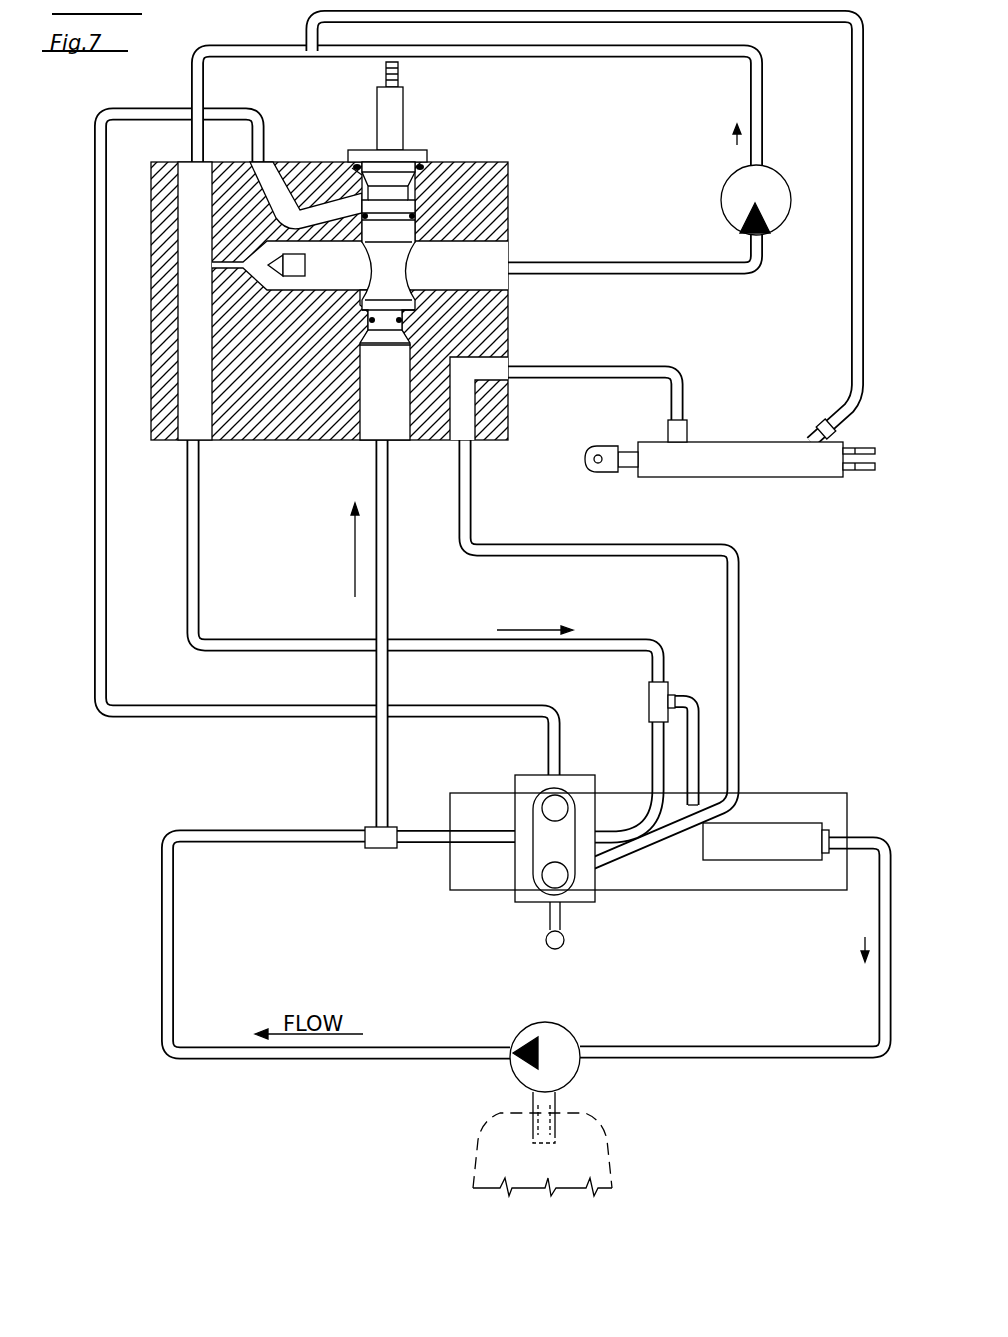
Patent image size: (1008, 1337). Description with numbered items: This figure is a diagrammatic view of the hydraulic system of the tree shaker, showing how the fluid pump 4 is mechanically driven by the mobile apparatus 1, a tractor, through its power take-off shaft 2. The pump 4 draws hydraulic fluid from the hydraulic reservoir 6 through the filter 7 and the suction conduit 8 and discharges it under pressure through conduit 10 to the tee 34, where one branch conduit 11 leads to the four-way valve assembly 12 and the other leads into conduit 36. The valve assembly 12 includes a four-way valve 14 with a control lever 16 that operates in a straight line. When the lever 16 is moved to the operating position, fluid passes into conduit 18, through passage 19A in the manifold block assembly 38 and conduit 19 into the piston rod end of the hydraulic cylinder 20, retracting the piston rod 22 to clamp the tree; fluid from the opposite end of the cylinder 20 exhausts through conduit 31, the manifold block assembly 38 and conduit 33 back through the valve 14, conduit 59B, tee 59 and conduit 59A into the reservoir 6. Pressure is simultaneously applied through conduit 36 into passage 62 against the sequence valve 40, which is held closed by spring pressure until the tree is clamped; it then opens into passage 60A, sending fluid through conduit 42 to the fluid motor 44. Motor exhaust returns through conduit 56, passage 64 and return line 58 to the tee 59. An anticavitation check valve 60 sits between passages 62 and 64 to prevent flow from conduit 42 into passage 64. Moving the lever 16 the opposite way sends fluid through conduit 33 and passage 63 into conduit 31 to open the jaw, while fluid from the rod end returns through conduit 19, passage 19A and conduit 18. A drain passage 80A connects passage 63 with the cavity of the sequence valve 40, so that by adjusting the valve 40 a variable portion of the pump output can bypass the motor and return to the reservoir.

The mobile apparatus 1 is at (584, 1146).
The power take-off shaft 2 is at (556, 1100).
The fluid pump 4 is at (570, 1040).
The hydraulic reservoir 6 is at (820, 806).
The filter 7 is at (763, 855).
The suction conduit 8 is at (880, 1003).
The conduit 10 is at (168, 1012).
The branch conduit 11 is at (430, 845).
The four-way valve assembly 12 is at (546, 817).
The four-way valve 14 is at (525, 806).
The control lever 16 is at (560, 926).
The conduit 18 is at (738, 608).
The conduit 19 is at (634, 366).
The passage 19A is at (506, 364).
The hydraulic cylinder 20 is at (750, 478).
The piston rod 22 is at (615, 470).
The conduit 31 is at (850, 284).
The conduit 33 is at (94, 353).
The tee 34 is at (370, 846).
The conduit 36 is at (388, 632).
The manifold block assembly 38 is at (347, 274).
The sequence valve 40 is at (398, 233).
The conduit 42 is at (655, 262).
The fluid motor 44 is at (728, 188).
The conduit 56 is at (657, 58).
The return line 58 is at (199, 568).
The tee 59 is at (663, 697).
The conduit 59A is at (700, 757).
The conduit 59B is at (652, 737).
The anticavitation check valve 60 is at (296, 272).
The passage 60A is at (508, 283).
The passage 62 is at (378, 441).
The passage 63 is at (264, 174).
The passage 64 is at (204, 446).
The drain passage 80A is at (360, 190).